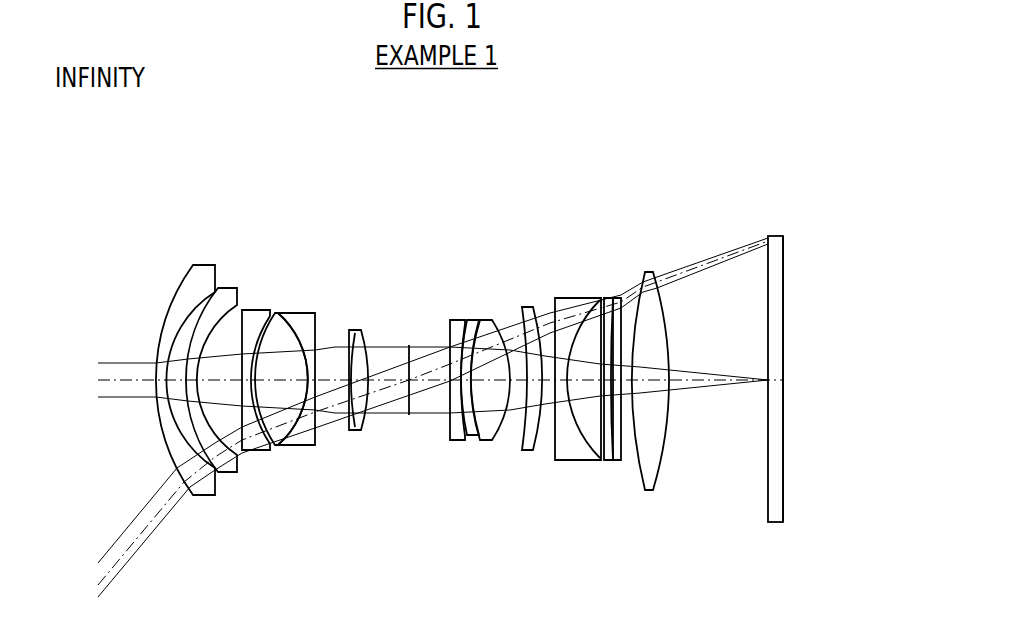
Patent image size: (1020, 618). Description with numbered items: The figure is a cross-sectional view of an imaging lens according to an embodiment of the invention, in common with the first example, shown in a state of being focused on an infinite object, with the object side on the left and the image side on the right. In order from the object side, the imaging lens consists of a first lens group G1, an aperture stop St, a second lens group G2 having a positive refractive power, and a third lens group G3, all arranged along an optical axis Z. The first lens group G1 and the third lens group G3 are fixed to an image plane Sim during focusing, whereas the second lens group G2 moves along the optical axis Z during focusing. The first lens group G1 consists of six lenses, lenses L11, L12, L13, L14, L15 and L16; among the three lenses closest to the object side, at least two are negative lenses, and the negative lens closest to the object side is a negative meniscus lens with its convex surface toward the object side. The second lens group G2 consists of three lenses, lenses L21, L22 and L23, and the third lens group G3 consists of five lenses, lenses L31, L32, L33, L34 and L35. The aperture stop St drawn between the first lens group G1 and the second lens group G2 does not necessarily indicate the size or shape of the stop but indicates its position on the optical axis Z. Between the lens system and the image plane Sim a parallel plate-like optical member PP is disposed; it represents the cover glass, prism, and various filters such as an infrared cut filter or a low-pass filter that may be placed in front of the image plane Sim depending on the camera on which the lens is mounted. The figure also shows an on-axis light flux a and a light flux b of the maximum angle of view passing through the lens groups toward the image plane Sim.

The first lens group G1 is at (372, 143).
The second lens group G2 is at (492, 143).
The third lens group G3 is at (670, 143).
The lens L11 is at (203, 268).
The lens L12 is at (228, 292).
The lens L13 is at (258, 310).
The lens L14 is at (277, 313).
The lens L15 is at (300, 315).
The lens L16 is at (353, 330).
The lens L21 is at (455, 320).
The lens L22 is at (472, 322).
The lens L23 is at (487, 318).
The lens L31 is at (532, 305).
The lens L32 is at (572, 300).
The lens L33 is at (600, 298).
The lens L34 is at (612, 298).
The lens L35 is at (650, 272).
The aperture stop St is at (409, 345).
The parallel plate-like optical member PP is at (778, 522).
The image plane Sim is at (788, 510).
The optical axis Z is at (123, 378).
The on-axis light flux a is at (97, 355).
The light flux of the maximum angle of view b is at (97, 557).